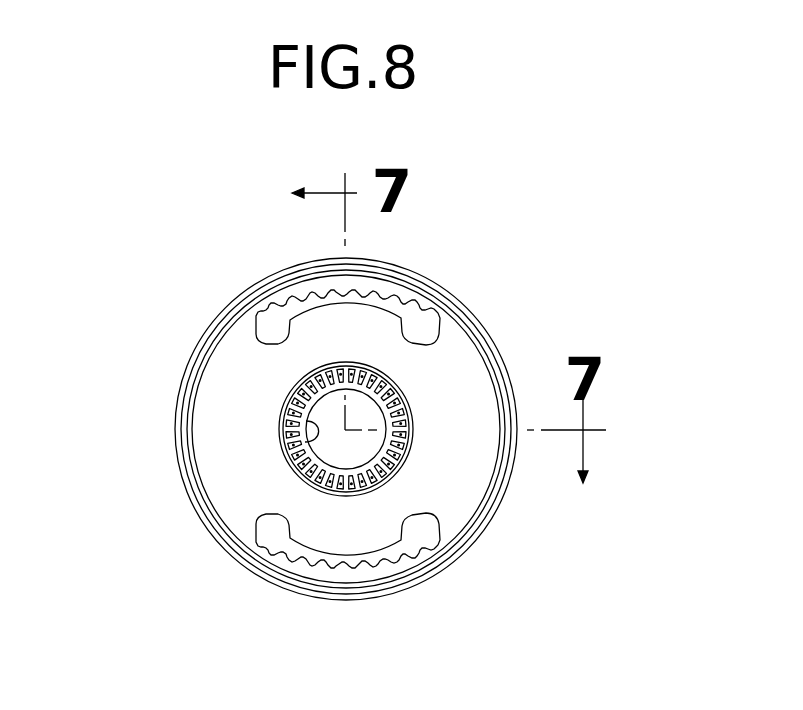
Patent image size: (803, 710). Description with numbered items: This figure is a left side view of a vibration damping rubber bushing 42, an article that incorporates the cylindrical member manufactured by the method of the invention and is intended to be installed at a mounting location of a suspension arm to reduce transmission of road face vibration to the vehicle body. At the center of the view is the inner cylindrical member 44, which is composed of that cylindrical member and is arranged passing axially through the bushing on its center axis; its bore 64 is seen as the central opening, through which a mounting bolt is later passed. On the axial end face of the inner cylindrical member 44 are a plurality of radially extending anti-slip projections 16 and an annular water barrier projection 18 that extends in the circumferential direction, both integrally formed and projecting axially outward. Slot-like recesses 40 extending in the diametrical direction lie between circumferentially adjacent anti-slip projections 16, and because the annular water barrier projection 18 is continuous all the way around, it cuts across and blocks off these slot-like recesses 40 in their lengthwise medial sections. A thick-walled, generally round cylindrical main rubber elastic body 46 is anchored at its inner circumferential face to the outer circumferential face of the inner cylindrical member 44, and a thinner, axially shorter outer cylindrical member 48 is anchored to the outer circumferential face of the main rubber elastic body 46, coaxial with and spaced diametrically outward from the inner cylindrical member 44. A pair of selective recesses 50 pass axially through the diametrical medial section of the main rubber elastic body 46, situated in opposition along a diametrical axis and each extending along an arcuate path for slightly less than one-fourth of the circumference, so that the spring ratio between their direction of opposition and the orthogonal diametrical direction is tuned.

The vibration damping rubber bushing 42 is at (470, 276).
The outer cylindrical member 48 is at (190, 375).
The main rubber elastic body 46 is at (470, 446).
The selective recesses 50 is at (384, 294).
The anti-slip projections 16 is at (292, 387).
The inner cylindrical member 44 is at (399, 388).
The bore 64 is at (280, 460).
The annular water barrier projection 18 is at (325, 482).
The slot-like recesses 40 is at (347, 375).